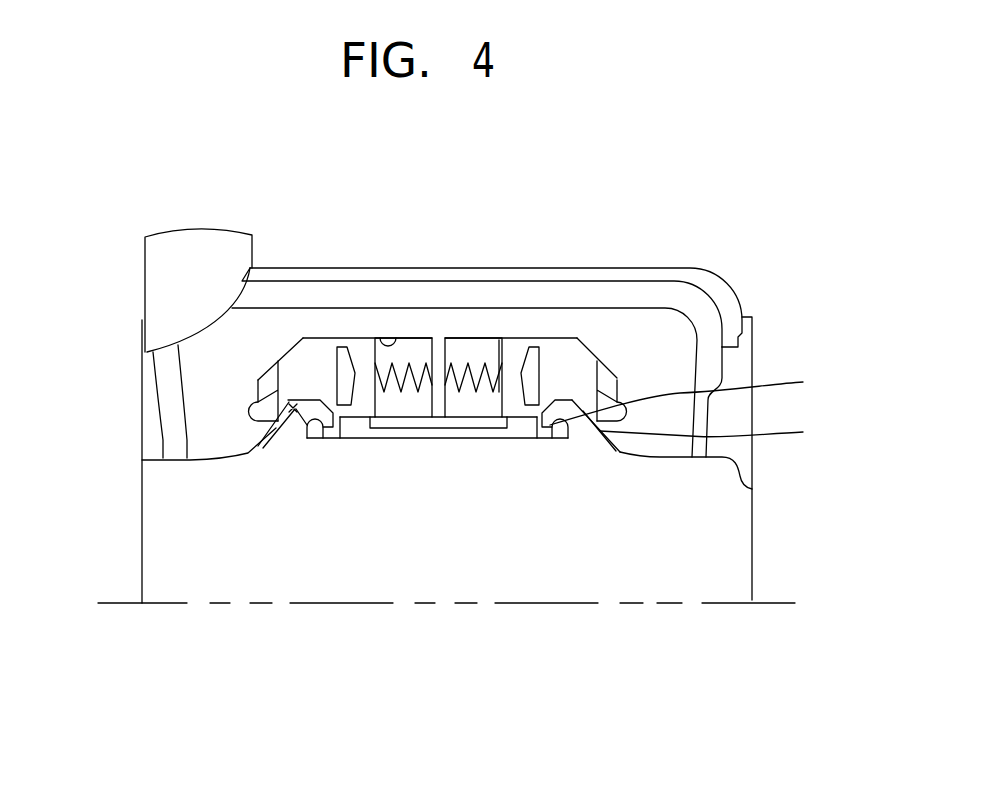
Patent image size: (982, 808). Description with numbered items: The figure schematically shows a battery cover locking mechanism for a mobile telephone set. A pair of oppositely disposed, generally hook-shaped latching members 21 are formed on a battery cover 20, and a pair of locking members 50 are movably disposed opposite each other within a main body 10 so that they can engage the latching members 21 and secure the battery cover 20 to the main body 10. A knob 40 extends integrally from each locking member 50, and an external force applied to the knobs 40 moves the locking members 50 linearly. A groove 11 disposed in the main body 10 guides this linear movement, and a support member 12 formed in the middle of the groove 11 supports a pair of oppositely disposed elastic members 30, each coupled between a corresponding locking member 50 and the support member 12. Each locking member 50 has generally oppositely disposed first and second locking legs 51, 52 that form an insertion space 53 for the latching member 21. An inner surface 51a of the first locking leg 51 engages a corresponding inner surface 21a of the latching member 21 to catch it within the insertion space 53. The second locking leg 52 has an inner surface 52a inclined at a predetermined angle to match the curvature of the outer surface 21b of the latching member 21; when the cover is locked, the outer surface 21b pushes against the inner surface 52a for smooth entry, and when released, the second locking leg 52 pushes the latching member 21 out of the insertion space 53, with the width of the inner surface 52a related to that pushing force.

The main body 10 is at (133, 268).
The groove 11 is at (381, 340).
The support member 12 is at (438, 402).
The battery cover 20 is at (133, 577).
The latching member 21 is at (293, 432).
The inner surface of latching member 21a is at (693, 397).
The outer surface of latching member 21b is at (718, 432).
The elastic member 30 is at (405, 345).
The knob 40 is at (340, 345).
The locking member 50 is at (293, 345).
The first locking leg 51 is at (325, 435).
The inner surface of first locking leg 51a is at (304, 434).
The second locking leg 52 is at (254, 405).
The inner surface of second locking leg 52a is at (262, 413).
The insertion space 53 is at (289, 410).